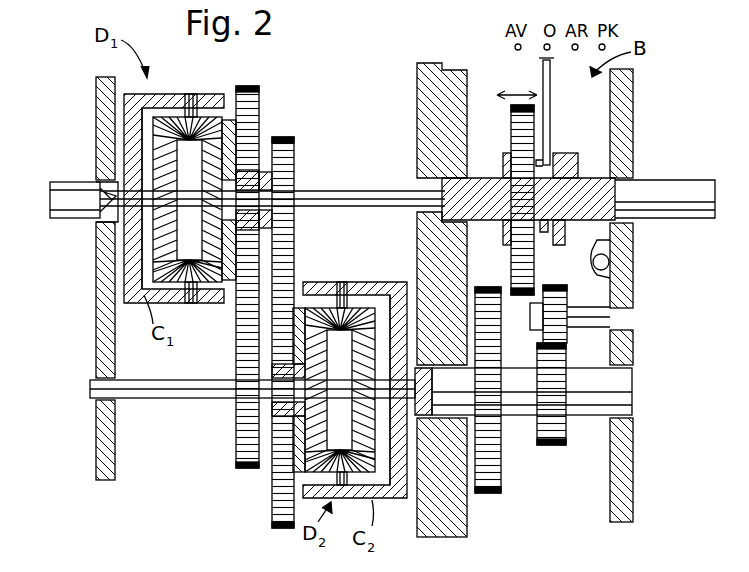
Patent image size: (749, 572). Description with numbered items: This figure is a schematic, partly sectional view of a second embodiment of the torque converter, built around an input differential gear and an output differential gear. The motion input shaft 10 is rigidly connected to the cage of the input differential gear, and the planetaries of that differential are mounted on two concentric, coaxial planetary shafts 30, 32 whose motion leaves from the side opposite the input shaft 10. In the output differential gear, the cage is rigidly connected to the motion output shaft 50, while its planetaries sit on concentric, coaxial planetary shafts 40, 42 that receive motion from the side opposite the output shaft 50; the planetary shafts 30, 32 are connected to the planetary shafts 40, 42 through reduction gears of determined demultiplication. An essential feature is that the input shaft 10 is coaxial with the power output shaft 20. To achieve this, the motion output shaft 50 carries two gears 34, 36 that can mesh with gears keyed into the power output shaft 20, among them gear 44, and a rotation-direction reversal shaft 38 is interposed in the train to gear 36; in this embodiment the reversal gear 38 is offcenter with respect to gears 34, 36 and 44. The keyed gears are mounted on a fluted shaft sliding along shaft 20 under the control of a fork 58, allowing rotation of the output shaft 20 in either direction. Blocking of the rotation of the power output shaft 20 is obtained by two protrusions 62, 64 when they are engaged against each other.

The motion input shaft 10 is at (66, 201).
The power output shaft 20 is at (680, 196).
The planetary shaft 30 is at (104, 208).
The planetary shaft 32 is at (253, 133).
The gear 34 is at (488, 495).
The gear 36 is at (553, 446).
The reversal shaft 38 is at (560, 292).
The planetary shaft 40 is at (185, 388).
The planetary shaft 42 is at (298, 455).
The gear 44 is at (530, 120).
The motion output shaft 50 is at (620, 394).
The fork 58 is at (544, 76).
The protrusion 62 is at (610, 258).
The protrusion 64 is at (568, 158).